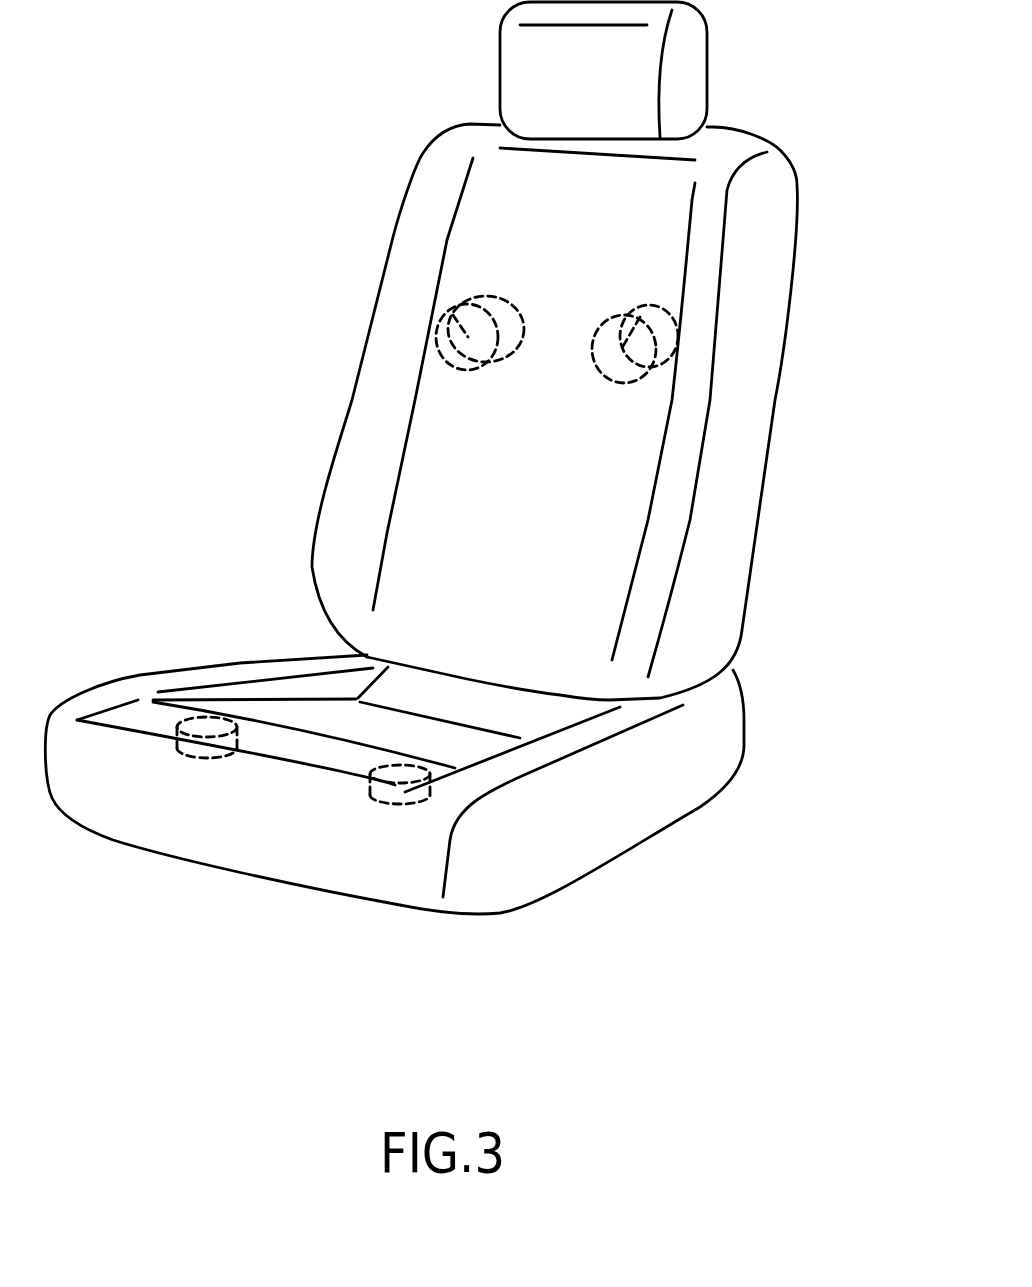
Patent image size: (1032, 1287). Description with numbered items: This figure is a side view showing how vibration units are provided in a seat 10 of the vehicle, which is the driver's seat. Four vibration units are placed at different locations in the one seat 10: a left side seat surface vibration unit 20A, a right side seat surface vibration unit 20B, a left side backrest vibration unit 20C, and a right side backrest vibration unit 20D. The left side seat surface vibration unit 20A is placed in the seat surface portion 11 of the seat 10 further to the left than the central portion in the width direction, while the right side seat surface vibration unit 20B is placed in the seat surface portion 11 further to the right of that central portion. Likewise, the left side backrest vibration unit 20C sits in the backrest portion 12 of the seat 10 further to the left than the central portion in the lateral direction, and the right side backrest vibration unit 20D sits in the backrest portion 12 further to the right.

The seat 10 is at (475, 503).
The seat surface portion 11 is at (573, 827).
The backrest portion 12 is at (760, 433).
The left side seat surface vibration unit 20A is at (390, 802).
The right side seat surface vibration unit 20B is at (193, 757).
The left side backrest vibration unit 20C is at (647, 307).
The right side backrest vibration unit 20D is at (440, 302).